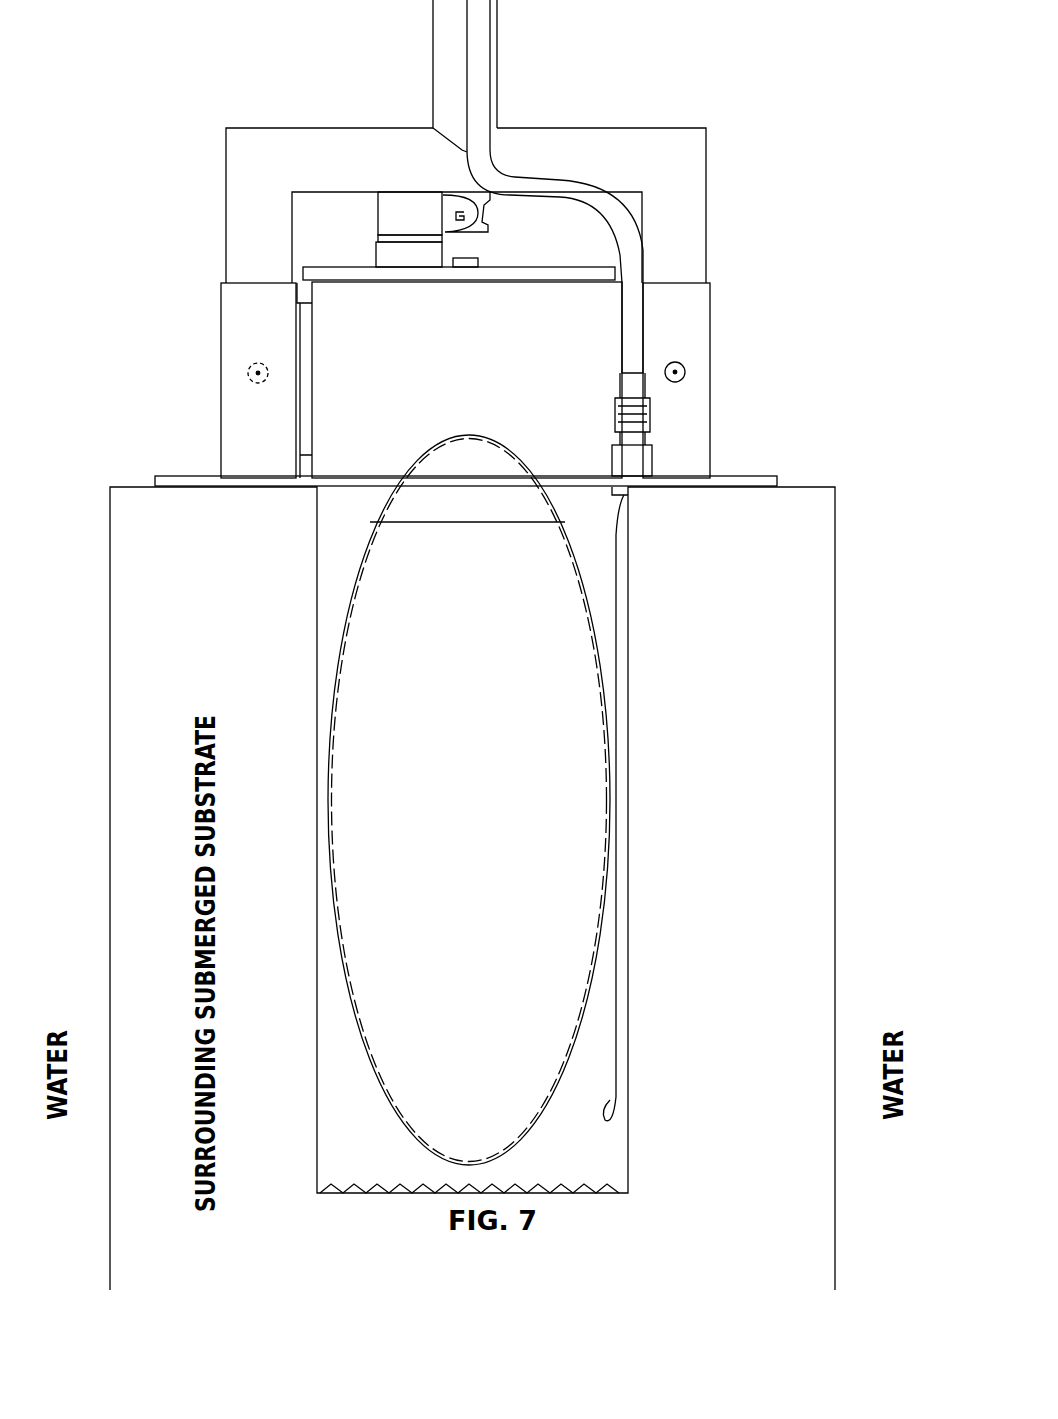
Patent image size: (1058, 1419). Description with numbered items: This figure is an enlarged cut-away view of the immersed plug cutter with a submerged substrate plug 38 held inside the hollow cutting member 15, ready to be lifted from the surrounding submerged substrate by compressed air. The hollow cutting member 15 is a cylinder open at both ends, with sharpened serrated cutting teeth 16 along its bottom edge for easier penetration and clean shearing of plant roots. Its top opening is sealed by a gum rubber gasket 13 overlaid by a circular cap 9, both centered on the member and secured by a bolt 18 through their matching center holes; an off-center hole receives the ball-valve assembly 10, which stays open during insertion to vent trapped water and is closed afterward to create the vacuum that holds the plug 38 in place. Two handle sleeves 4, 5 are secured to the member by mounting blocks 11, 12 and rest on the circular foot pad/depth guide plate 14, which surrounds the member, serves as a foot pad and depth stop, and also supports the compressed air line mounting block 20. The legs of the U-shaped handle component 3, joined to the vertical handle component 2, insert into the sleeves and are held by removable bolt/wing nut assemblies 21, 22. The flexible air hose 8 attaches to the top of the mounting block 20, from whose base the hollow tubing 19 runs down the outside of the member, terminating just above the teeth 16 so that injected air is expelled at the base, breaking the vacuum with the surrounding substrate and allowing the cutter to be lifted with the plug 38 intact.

The handle component 2 is at (463, 133).
The U-shaped handle component 3 is at (668, 152).
The handle sleeve 4 is at (250, 328).
The handle sleeve 5 is at (695, 327).
The flexible air hose 8 is at (487, 147).
The circular cap 9 is at (583, 272).
The ball-valve assembly 10 is at (407, 247).
The mounting block 11 is at (632, 317).
The mounting block 12 is at (302, 318).
The gum rubber gasket 13 is at (383, 293).
The foot pad/depth guide plate 14 is at (760, 470).
The hollow cutting member 15 is at (588, 1072).
The serrated cutting teeth 16 is at (602, 1192).
The bolt 18 is at (470, 258).
The hollow tubing 19 is at (617, 1107).
The compressed air line mounting block 20 is at (638, 465).
The bolt/wing nut assembly 21 is at (685, 370).
The bolt/wing nut assembly 22 is at (250, 370).
The submerged substrate plug 38 is at (488, 826).